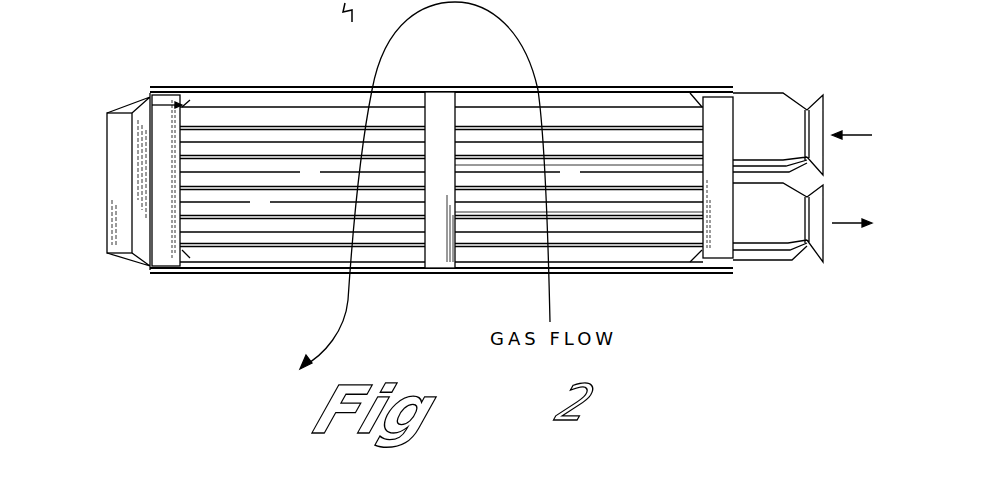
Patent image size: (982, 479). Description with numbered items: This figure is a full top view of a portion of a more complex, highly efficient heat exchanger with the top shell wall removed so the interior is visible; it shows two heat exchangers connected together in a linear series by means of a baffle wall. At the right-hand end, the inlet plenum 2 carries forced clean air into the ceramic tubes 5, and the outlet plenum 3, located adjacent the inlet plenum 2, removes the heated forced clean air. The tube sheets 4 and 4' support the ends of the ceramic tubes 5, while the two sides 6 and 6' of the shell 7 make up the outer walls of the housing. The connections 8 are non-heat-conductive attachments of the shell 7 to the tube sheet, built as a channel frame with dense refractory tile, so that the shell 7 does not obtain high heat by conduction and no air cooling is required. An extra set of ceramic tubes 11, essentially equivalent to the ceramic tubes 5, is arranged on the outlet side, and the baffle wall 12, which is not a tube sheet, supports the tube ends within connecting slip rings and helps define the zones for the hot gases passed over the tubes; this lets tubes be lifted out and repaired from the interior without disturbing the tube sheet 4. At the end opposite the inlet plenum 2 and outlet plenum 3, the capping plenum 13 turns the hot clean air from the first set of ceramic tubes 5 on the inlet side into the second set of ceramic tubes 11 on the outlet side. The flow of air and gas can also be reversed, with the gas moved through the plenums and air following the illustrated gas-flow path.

The inlet plenum 2 is at (770, 110).
The outlet plenum 3 is at (770, 265).
The tube sheet 4 is at (554, 42).
The tube sheet 4' is at (139, 83).
The ceramic tubes 5 is at (652, 118).
The side of shell 6 is at (579, 94).
The side of shell 6' is at (579, 264).
The shell 7 is at (257, 277).
The connections 8 is at (190, 85).
The ceramic tubes 11 is at (325, 75).
The baffle wall 12 is at (445, 107).
The capping plenum 13 is at (107, 172).